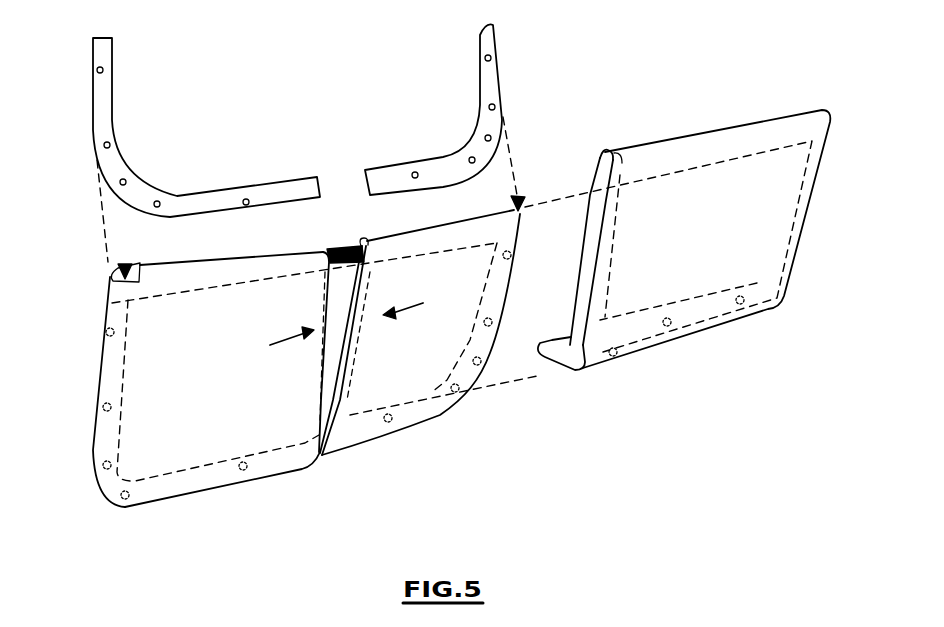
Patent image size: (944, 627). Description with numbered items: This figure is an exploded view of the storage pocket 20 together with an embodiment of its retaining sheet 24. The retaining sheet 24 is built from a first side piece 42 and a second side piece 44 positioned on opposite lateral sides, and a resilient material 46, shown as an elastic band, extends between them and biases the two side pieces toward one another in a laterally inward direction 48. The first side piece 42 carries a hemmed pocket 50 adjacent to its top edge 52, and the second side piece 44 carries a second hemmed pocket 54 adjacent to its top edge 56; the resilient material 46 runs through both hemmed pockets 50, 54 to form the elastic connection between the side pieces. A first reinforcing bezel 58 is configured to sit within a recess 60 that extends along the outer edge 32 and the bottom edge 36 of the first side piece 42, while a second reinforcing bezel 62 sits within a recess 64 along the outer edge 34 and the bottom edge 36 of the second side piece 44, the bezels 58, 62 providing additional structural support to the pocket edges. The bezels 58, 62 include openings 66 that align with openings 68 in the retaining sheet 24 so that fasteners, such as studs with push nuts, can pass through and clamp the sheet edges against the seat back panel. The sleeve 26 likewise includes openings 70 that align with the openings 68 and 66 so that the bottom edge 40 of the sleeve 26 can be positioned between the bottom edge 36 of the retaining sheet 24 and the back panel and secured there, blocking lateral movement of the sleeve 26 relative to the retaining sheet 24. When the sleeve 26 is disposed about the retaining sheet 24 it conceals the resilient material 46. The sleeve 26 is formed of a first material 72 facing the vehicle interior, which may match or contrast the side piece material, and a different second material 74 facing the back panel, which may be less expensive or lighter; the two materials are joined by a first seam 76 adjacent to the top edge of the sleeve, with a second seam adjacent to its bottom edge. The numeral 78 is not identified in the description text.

The storage pocket 20 is at (347, 66).
The retaining sheet 24 is at (68, 430).
The sleeve 26 is at (673, 140).
The outer edge 32 is at (93, 455).
The outer edge 34 is at (493, 357).
The bottom edge 36 is at (343, 450).
The bottom edge 40 is at (613, 364).
The first side piece 42 is at (182, 432).
The second side piece 44 is at (397, 362).
The resilient material 46 is at (352, 248).
The laterally inward direction 48 is at (290, 330).
The hemmed pocket 50 is at (185, 288).
The top edge 52 is at (200, 261).
The second hemmed pocket 54 is at (430, 242).
The top edge 56 is at (499, 195).
The first reinforcing bezel 58 is at (207, 193).
The recess 60 is at (122, 262).
The second reinforcing bezel 62 is at (440, 158).
The recess 64 is at (516, 196).
The openings 66 is at (126, 181).
The openings 68 is at (100, 400).
The openings 70 is at (620, 356).
The first material 72 is at (765, 140).
The second material 74 is at (583, 250).
The first seam 76 is at (590, 183).
The hook 78 is at (557, 370).